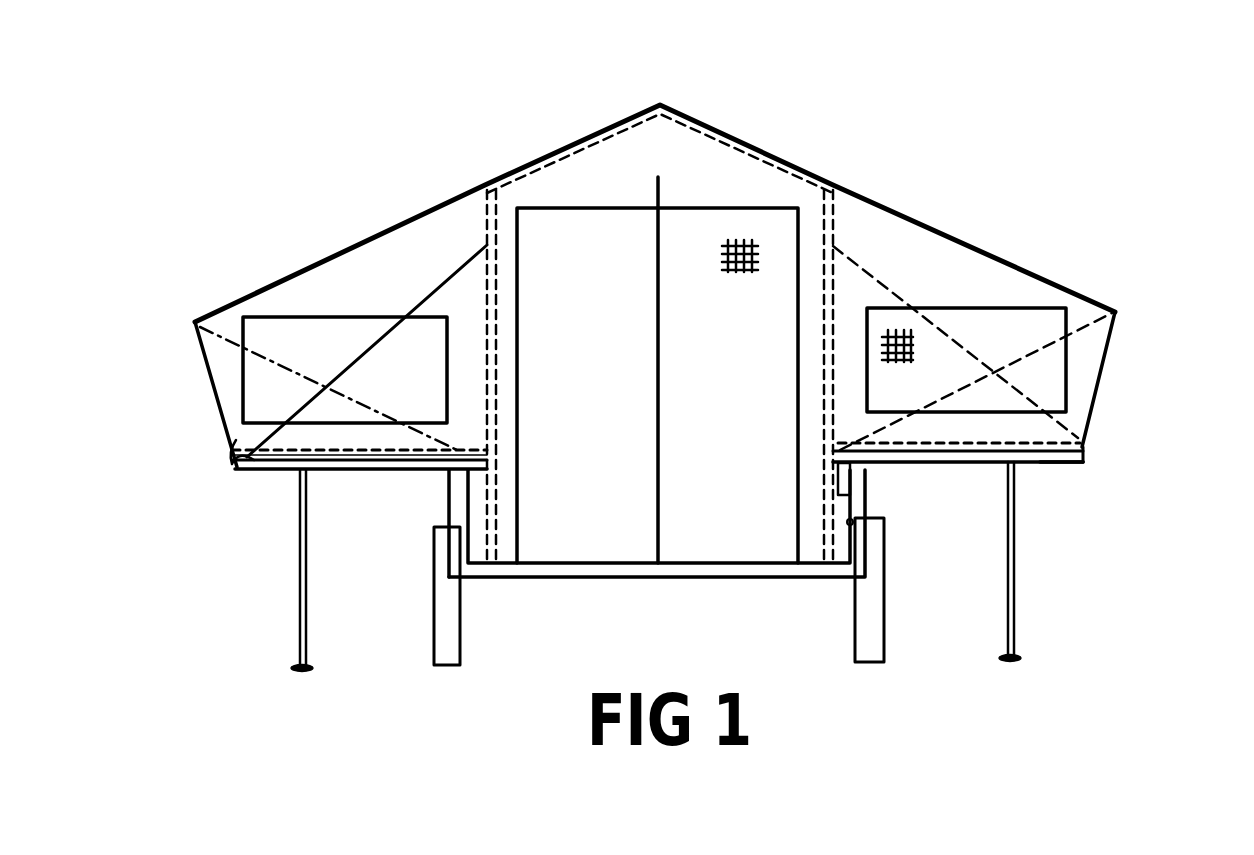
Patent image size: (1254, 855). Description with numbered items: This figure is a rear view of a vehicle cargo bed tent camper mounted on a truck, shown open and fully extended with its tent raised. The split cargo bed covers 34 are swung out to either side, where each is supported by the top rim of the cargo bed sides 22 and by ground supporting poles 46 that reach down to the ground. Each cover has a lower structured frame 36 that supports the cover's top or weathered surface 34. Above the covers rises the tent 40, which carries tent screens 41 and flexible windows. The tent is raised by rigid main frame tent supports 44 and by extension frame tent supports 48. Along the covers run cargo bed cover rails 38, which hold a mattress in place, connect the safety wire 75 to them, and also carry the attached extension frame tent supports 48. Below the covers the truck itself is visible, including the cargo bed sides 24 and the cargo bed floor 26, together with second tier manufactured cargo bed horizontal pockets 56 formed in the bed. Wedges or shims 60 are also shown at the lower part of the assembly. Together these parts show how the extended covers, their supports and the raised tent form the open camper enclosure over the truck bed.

The tent 40 is at (452, 192).
The rigid main frame tent supports 44 is at (832, 205).
The tent screens 41 is at (758, 225).
The safety wire 75 is at (858, 253).
The extension frame tent supports 48 is at (1093, 310).
The cargo bed cover rails 38 is at (263, 460).
The split cargo bed covers 34 is at (1082, 447).
The lower structured frame 36 is at (1047, 463).
The ground supporting poles 46 is at (1020, 575).
The cargo bed sides 24 is at (445, 500).
The cargo bed floor 26 is at (570, 565).
The second tier manufactured cargo bed horizontal pockets 56 is at (463, 528).
The wedges or shims 60 is at (866, 485).
The top rim of the cargo bed sides 22 is at (863, 467).